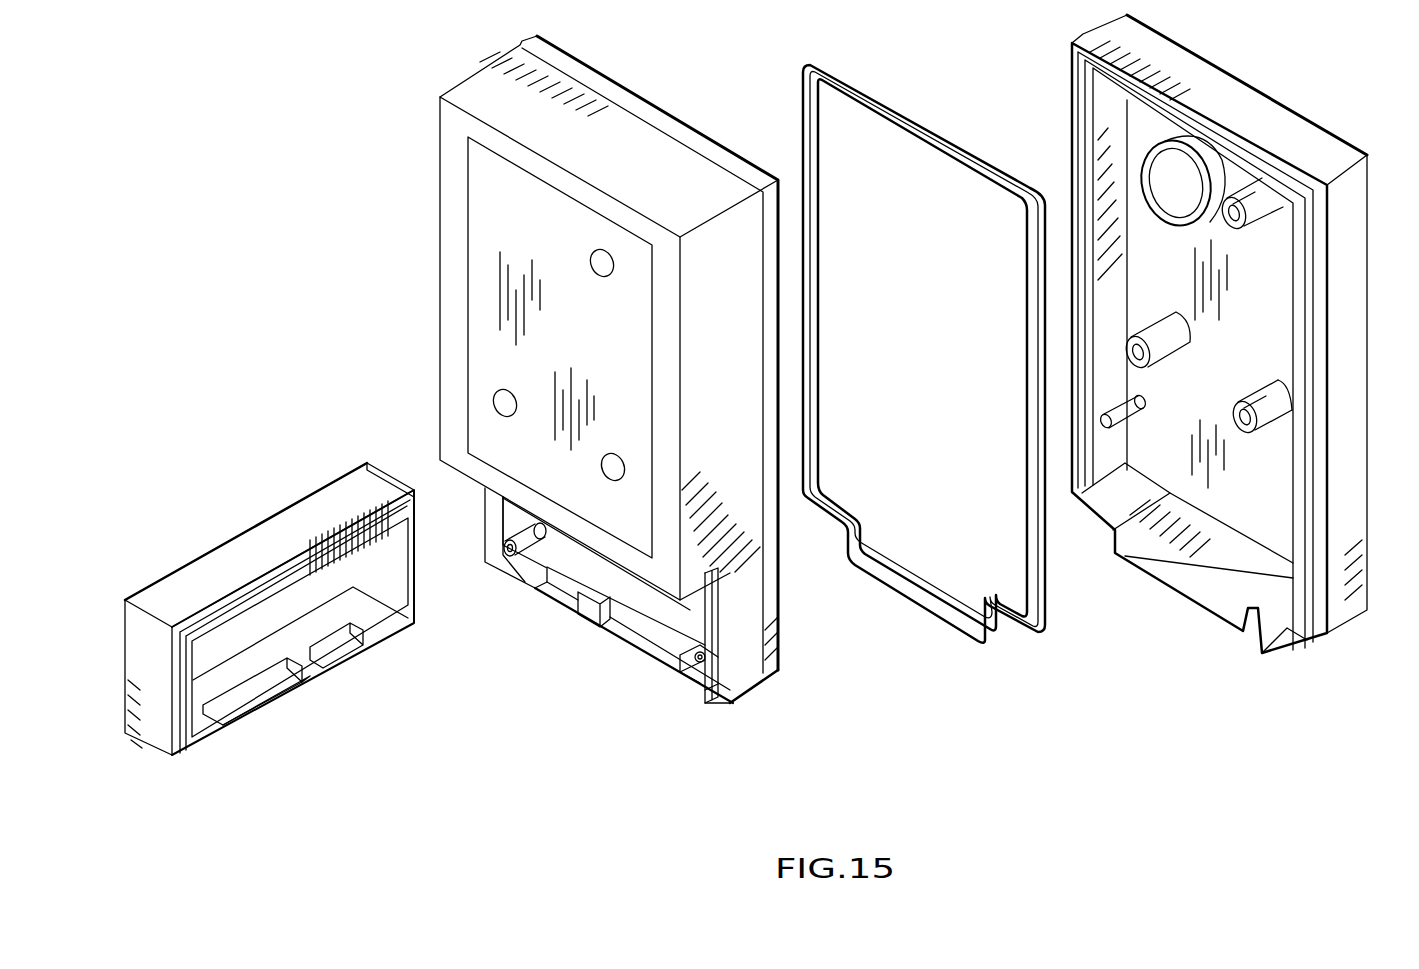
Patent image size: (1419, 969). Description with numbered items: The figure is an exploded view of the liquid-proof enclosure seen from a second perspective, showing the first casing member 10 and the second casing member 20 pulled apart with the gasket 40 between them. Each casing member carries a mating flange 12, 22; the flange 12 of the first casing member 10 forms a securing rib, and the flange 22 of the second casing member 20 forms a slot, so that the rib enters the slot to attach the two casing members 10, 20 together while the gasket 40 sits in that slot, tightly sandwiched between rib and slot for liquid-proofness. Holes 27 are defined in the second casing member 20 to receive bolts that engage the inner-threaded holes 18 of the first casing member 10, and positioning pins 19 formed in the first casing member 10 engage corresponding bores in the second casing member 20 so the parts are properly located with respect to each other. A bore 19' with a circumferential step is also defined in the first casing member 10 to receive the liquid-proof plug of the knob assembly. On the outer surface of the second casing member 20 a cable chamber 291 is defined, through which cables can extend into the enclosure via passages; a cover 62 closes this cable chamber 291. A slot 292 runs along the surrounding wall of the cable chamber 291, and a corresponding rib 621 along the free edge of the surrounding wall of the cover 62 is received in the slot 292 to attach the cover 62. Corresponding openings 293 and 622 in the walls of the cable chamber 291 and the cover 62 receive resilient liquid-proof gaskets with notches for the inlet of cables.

The first casing member 10 is at (1355, 520).
The mating flange 12 is at (1320, 232).
The inner-threaded holes 18 is at (1242, 228).
The positioning pins 19 is at (1149, 370).
The bore 19' is at (1122, 180).
The second casing member 20 is at (483, 83).
The mating flange 22 is at (633, 102).
The holes 27 is at (597, 260).
The gasket 40 is at (907, 118).
The cover 62 is at (262, 537).
The rib 621 is at (343, 547).
The openings 622 is at (253, 687).
The cable chamber 291 is at (618, 592).
The slot 292 is at (712, 683).
The openings 293 is at (555, 595).